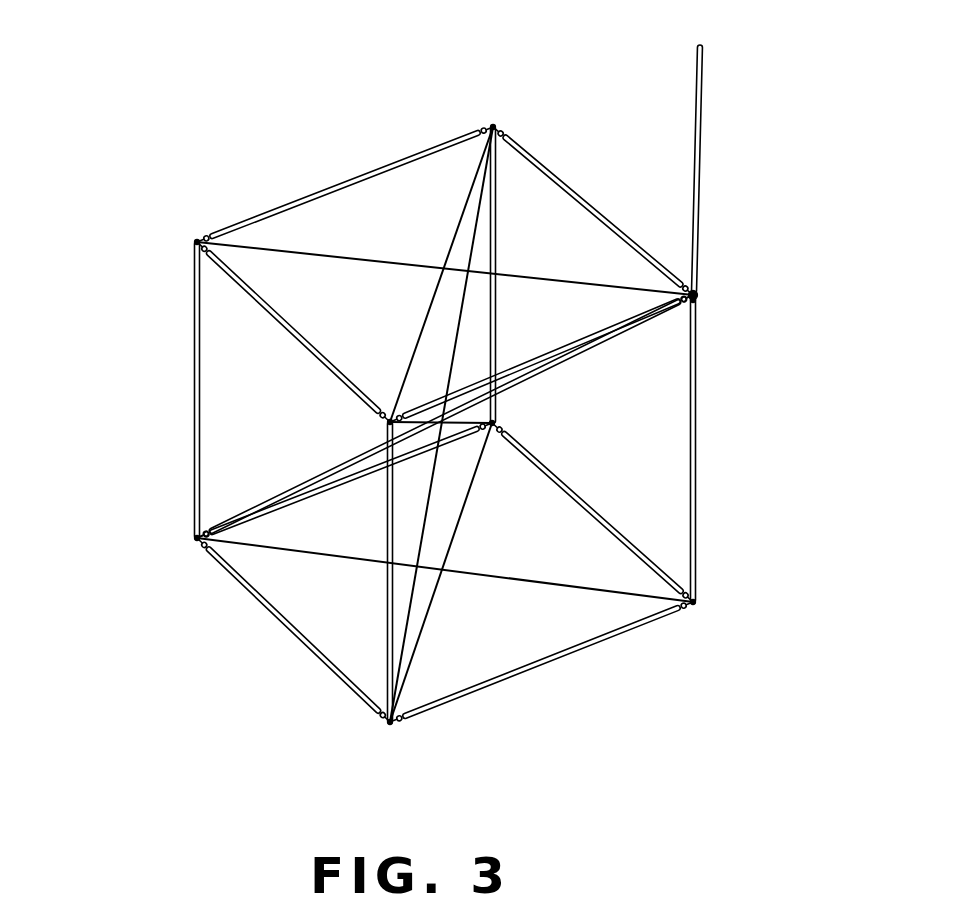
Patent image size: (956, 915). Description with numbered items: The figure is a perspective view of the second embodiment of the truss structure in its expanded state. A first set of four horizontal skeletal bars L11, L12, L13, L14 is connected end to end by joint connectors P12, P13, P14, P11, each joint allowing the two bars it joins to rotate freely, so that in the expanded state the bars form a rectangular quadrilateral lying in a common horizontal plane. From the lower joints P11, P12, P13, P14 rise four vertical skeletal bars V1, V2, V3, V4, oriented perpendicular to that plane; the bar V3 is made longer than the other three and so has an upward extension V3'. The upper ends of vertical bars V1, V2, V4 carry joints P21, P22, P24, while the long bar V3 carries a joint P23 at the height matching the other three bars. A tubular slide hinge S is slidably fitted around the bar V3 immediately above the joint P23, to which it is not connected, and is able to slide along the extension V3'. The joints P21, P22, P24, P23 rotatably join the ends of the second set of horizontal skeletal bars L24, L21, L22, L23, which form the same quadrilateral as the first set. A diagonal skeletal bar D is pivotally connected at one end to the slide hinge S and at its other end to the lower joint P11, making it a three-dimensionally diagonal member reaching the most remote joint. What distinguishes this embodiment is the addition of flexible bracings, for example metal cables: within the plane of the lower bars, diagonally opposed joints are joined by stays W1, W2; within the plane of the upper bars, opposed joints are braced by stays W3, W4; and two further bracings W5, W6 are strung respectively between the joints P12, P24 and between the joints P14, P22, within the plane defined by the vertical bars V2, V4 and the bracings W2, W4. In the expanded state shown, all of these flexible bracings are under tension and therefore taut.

The joint connector P11 is at (197, 548).
The joint connector P12 is at (395, 725).
The joint connector P13 is at (695, 608).
The joint connector P14 is at (497, 425).
The joint P21 is at (196, 262).
The joint P22 is at (392, 416).
The joint P23 is at (700, 322).
The joint P24 is at (497, 125).
The horizontal skeletal bar L11 is at (300, 638).
The horizontal skeletal bar L12 is at (570, 652).
The horizontal skeletal bar L13 is at (580, 502).
The horizontal skeletal bar L14 is at (352, 480).
The horizontal skeletal bar L21 is at (276, 317).
The horizontal skeletal bar L22 is at (598, 338).
The horizontal skeletal bar L23 is at (580, 192).
The horizontal skeletal bar L24 is at (336, 183).
The vertical skeletal bar V1 is at (196, 440).
The vertical skeletal bar V2 is at (388, 603).
The vertical skeletal bar V3 is at (730, 448).
The vertical skeletal bar V4 is at (497, 233).
The upward extension V3' is at (731, 169).
The flexible bracing W1 is at (546, 581).
The flexible bracing W2 is at (430, 612).
The flexible bracing W3 is at (348, 258).
The flexible bracing W4 is at (428, 313).
The flexible bracing W5 is at (437, 472).
The flexible bracing W6 is at (460, 421).
The diagonal skeletal bar D is at (337, 470).
The slide hinge S is at (700, 297).